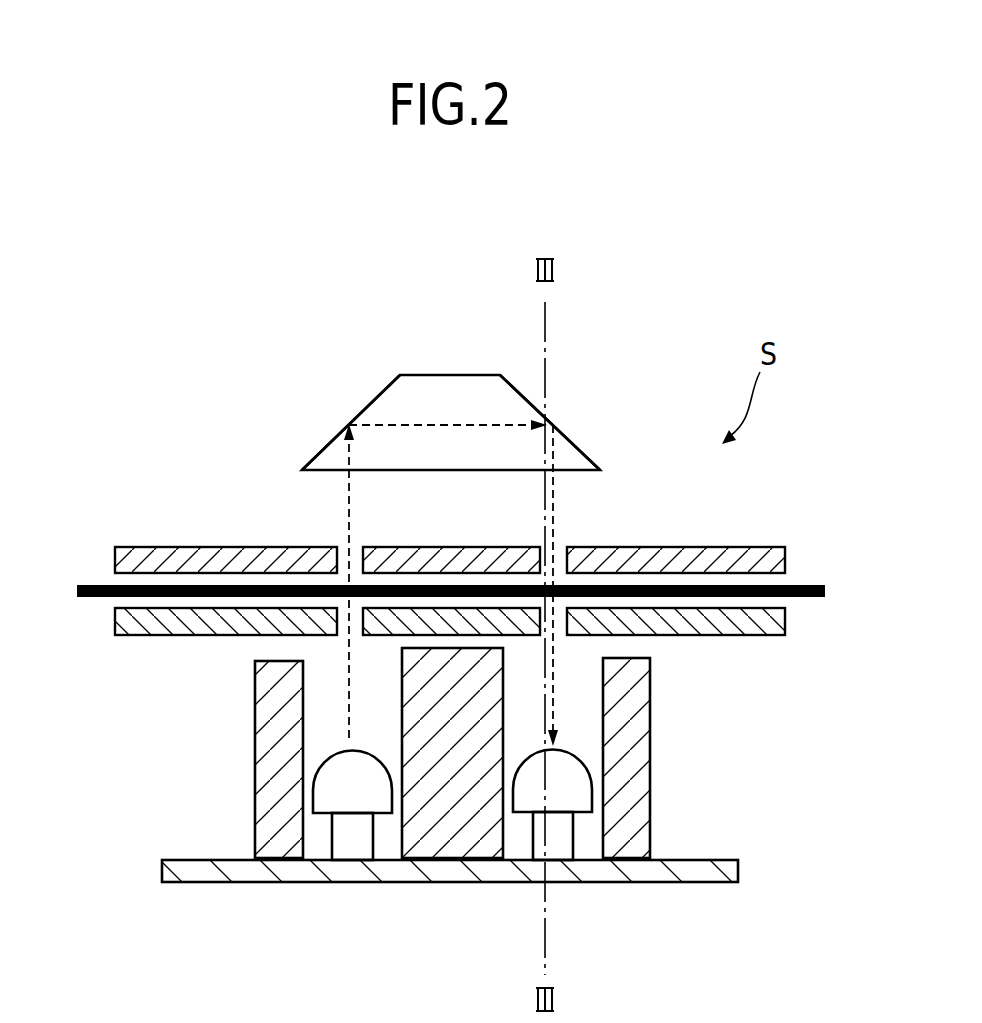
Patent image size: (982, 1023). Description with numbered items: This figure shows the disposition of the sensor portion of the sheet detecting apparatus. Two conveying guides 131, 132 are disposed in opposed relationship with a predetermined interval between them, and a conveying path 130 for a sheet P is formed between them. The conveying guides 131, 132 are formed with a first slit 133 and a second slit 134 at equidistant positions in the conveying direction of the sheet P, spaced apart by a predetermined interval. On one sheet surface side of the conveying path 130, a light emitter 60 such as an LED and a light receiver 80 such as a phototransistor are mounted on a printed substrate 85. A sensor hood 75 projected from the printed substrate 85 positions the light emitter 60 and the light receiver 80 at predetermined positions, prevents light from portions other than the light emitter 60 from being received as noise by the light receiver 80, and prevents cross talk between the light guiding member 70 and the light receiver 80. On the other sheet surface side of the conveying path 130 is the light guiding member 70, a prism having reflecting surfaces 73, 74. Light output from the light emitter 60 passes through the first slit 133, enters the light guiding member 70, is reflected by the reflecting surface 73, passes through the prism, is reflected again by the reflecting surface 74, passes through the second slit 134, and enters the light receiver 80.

The light guiding member 70 is at (450, 388).
The reflecting surface 73 is at (348, 425).
The reflecting surface 74 is at (522, 393).
The sheet conveying path 130 is at (453, 596).
The conveying guide 131 is at (115, 562).
The conveying guide 132 is at (115, 623).
The first slit 133 is at (343, 550).
The second slit 134 is at (558, 548).
The sheet P is at (800, 580).
The sensor hood 75 is at (255, 787).
The printed substrate 85 is at (162, 872).
The light emitter 60 is at (330, 833).
The light receiver 80 is at (567, 830).